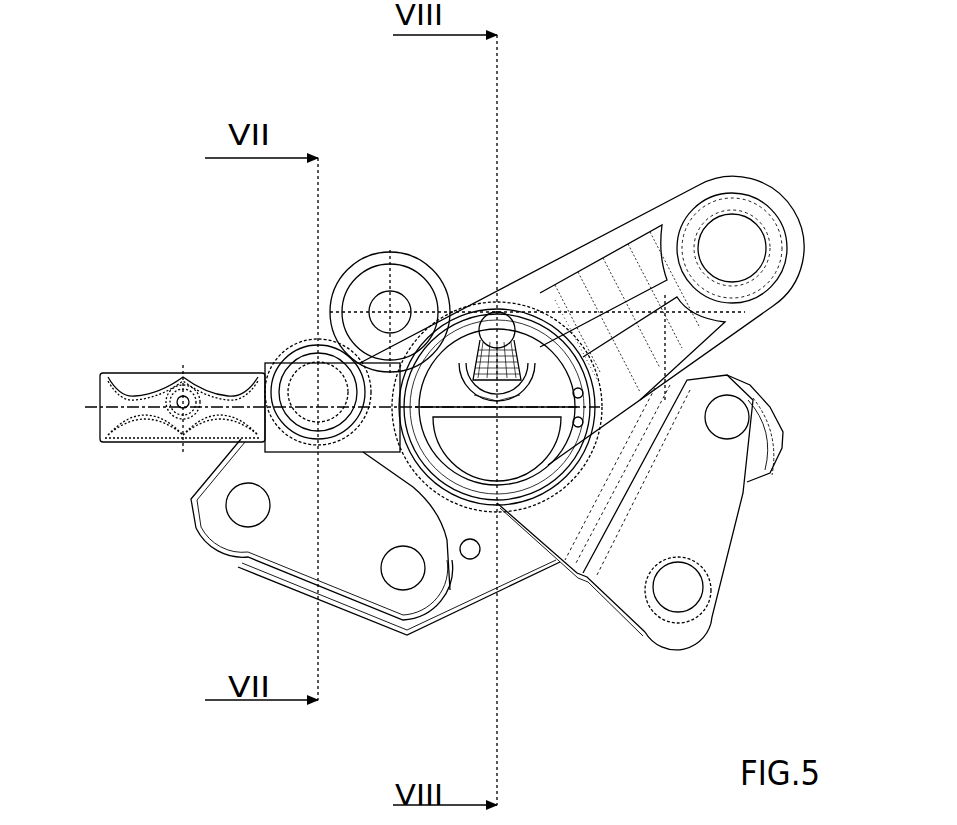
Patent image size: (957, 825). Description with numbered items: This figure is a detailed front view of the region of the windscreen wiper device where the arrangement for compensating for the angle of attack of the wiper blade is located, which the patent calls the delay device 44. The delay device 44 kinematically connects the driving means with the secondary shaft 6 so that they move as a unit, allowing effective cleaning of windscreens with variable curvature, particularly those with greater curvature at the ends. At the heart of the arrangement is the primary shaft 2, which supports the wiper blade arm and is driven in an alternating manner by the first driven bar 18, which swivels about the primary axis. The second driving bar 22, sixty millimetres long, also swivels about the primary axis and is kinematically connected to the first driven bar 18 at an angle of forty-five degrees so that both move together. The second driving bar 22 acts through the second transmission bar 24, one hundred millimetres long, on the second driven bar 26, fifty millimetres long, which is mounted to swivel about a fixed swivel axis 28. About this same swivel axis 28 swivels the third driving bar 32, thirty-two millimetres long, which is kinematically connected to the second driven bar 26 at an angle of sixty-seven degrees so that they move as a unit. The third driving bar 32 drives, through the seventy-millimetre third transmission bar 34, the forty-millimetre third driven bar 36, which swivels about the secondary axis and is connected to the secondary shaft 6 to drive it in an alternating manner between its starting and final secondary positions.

The primary shaft 2 is at (488, 326).
The secondary shaft 6 is at (543, 363).
The first driven bar 18 is at (627, 558).
The second driving bar 22 is at (677, 427).
The second transmission bar 24 is at (477, 592).
The second driven bar 26 is at (373, 488).
The swivel axis 28 is at (317, 392).
The third driving bar 32 is at (265, 470).
The third transmission bar 34 is at (197, 515).
The third driven bar 36 is at (426, 283).
The delay device 44 is at (599, 194).